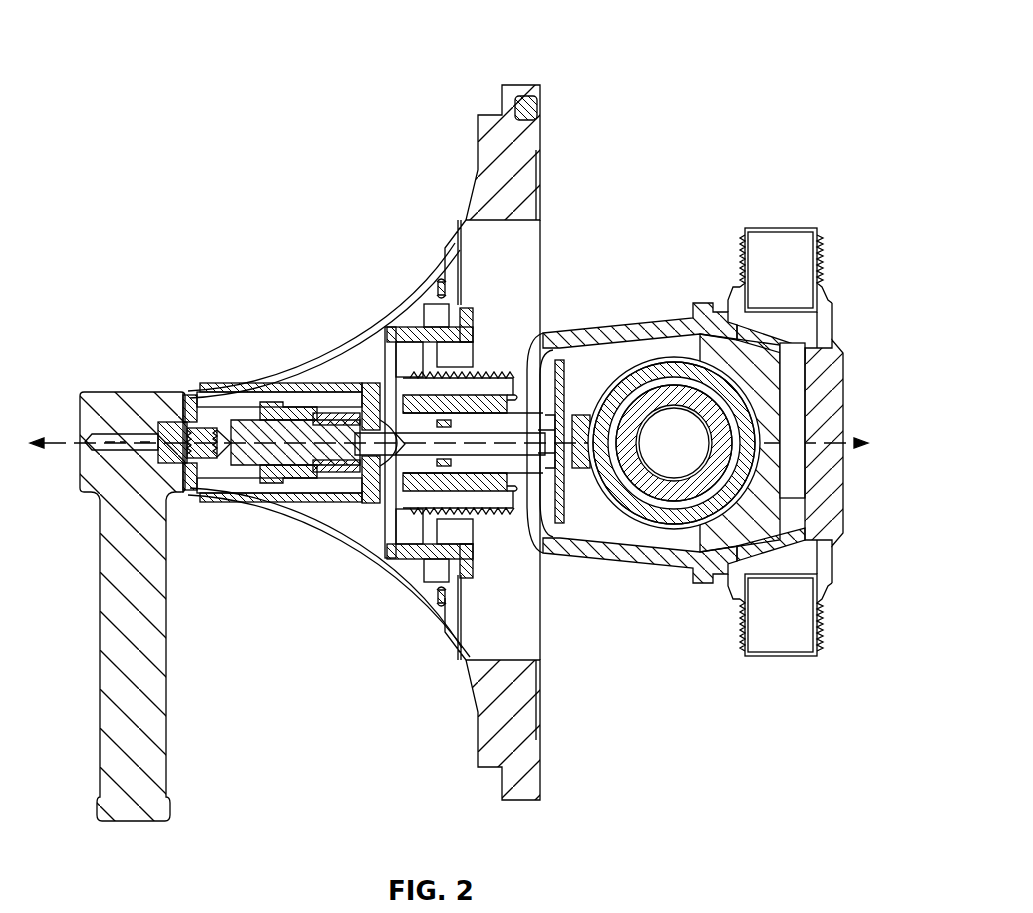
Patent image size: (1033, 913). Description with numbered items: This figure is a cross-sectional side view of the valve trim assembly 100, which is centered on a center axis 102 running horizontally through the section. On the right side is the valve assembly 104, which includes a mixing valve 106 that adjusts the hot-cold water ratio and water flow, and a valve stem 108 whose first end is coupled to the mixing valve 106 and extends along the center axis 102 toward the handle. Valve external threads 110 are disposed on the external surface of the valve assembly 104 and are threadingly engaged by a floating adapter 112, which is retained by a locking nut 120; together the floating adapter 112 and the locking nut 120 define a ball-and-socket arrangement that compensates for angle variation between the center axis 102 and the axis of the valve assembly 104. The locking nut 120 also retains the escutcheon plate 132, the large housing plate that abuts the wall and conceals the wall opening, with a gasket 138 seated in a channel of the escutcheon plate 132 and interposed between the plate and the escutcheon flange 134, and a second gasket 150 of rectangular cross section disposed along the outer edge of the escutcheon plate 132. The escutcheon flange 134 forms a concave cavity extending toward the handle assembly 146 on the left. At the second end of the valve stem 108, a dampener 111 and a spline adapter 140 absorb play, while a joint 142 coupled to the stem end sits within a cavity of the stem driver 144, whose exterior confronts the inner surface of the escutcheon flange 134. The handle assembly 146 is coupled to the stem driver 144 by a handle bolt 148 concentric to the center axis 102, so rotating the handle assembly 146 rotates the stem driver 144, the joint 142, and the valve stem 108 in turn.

The valve trim assembly 100 is at (240, 101).
The center axis 102 is at (80, 456).
The valve assembly 104 is at (747, 196).
The mixing valve 106 is at (650, 332).
The valve stem 108 is at (513, 410).
The valve external threads 110 is at (470, 515).
The dampener 111 is at (370, 498).
The floating adapter 112 is at (436, 592).
The locking nut 120 is at (410, 333).
The escutcheon plate 132 is at (477, 158).
The escutcheon flange 134 is at (278, 380).
The gasket 138 is at (438, 285).
The spline adapter 140 is at (345, 495).
The joint 142 is at (298, 486).
The stem driver 144 is at (234, 494).
The handle assembly 146 is at (133, 392).
The handle bolt 148 is at (198, 492).
The gasket 150 is at (522, 100).